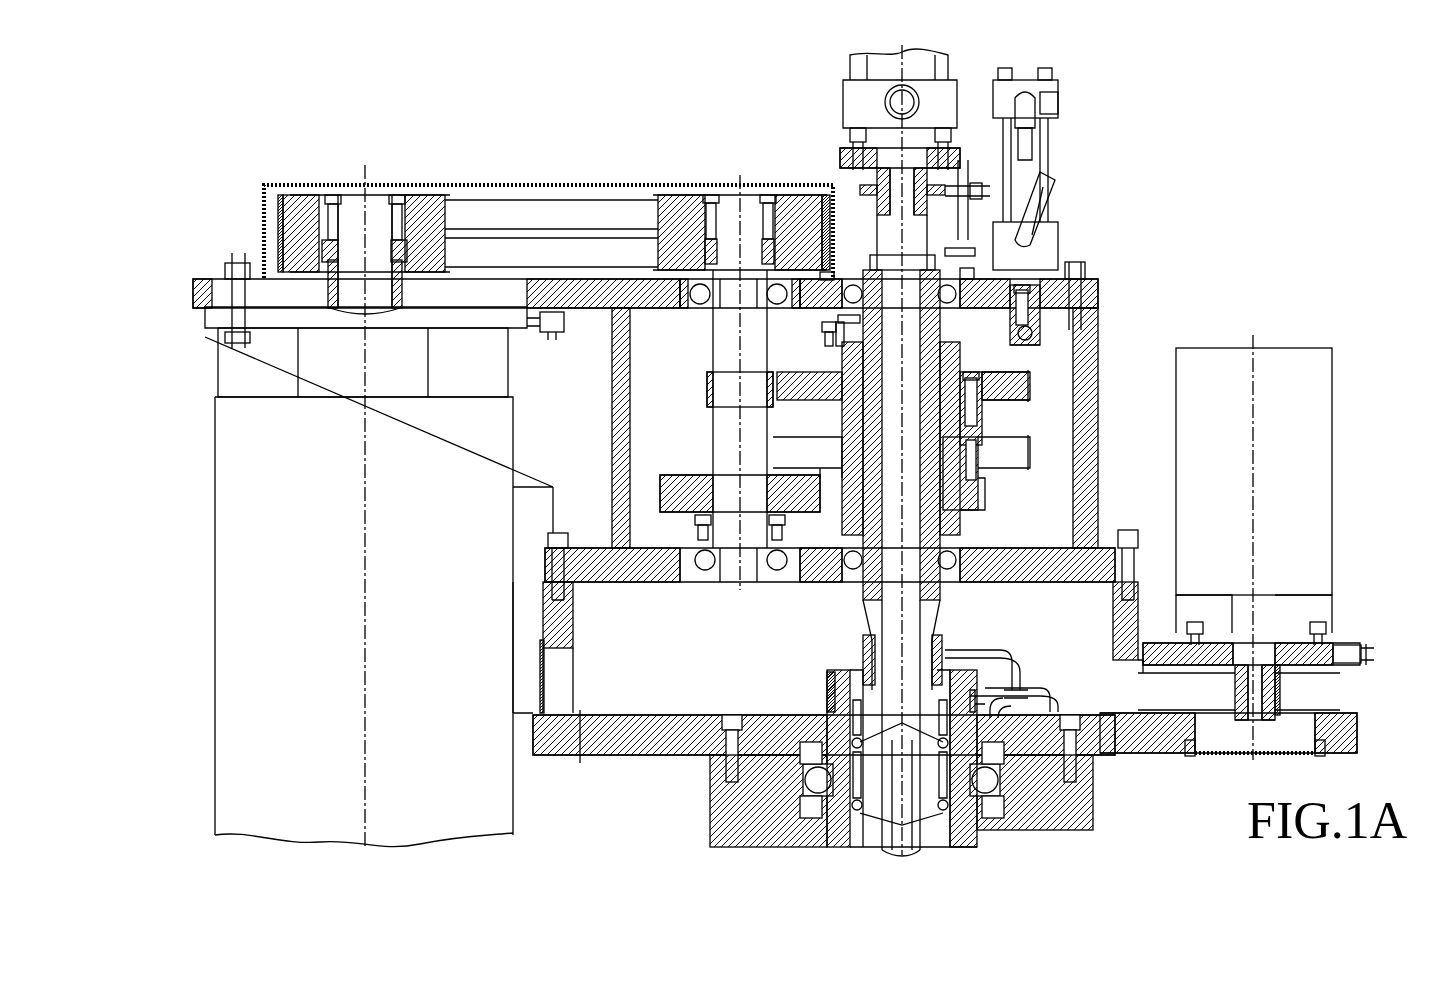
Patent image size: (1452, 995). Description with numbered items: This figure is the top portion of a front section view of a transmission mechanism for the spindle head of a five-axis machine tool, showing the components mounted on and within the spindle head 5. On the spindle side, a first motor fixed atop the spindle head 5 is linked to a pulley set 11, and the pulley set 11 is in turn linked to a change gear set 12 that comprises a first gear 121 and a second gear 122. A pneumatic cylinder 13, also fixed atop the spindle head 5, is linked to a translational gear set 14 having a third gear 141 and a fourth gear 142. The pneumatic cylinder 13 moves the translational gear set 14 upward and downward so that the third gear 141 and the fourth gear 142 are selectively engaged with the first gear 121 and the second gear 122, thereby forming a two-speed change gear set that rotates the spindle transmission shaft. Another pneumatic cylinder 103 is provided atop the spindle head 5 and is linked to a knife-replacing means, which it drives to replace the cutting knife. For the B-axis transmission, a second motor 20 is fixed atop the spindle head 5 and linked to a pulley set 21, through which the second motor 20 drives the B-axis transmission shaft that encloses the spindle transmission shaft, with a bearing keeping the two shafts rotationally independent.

The spindle head 5 is at (712, 805).
The pulley set 11 is at (548, 215).
The change gear set 12 is at (692, 382).
The first gear 121 is at (660, 487).
The second gear 122 is at (722, 378).
The pneumatic cylinder 13 is at (1047, 155).
The translational gear set 14 is at (1064, 398).
The third gear 141 is at (1035, 372).
The fourth gear 142 is at (985, 440).
The second motor 20 is at (1295, 503).
The pulley set 21 is at (1160, 697).
The pneumatic cylinder 103 is at (878, 60).